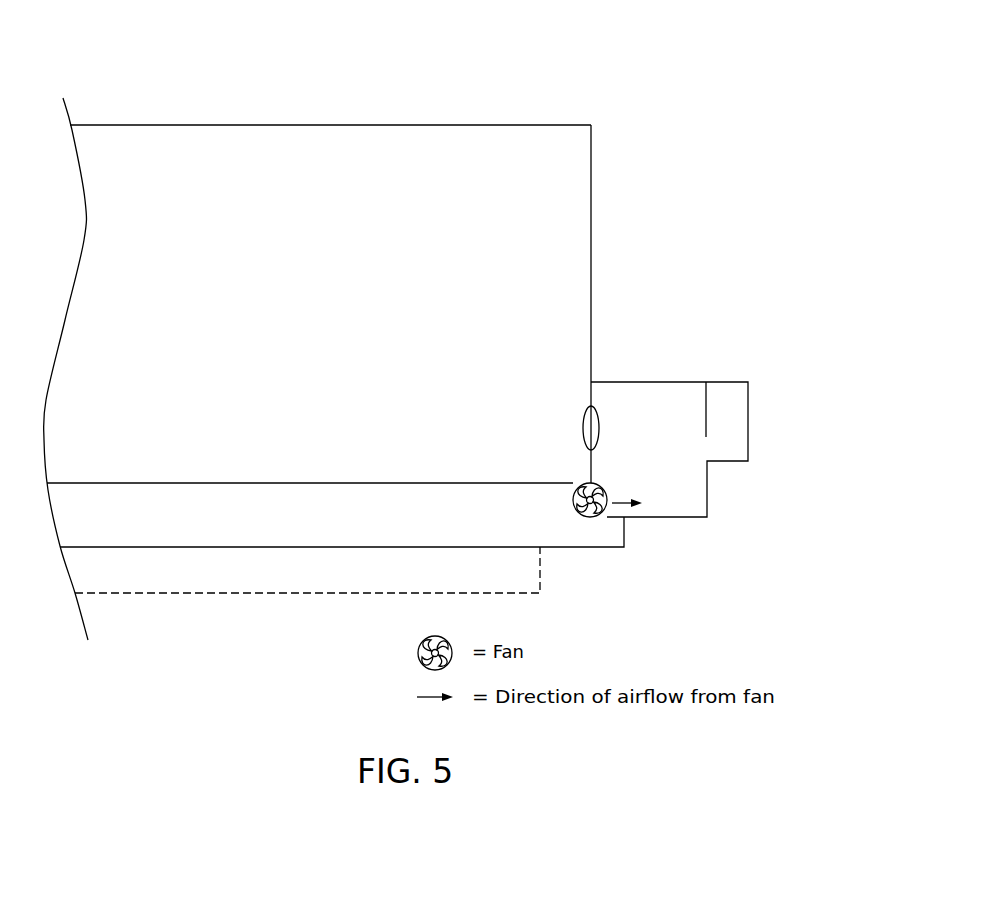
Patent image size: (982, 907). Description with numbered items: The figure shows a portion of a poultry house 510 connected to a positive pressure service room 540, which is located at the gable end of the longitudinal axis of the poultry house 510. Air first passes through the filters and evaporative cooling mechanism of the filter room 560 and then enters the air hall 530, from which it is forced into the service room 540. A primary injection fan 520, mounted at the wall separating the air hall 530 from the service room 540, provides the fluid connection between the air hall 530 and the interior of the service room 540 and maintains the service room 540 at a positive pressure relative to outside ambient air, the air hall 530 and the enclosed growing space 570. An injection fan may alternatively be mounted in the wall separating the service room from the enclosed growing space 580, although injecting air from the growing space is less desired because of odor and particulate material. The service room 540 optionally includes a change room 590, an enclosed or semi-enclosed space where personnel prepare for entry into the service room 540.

The poultry house 510 is at (433, 105).
The injection fan 520 is at (578, 520).
The air hall 530 is at (341, 527).
The service room 540 is at (697, 507).
The filter room 560 is at (343, 581).
The enclosed growing space 570 is at (363, 315).
The wall separating the service room from the enclosed growing space 580 is at (583, 430).
The change room 590 is at (727, 432).